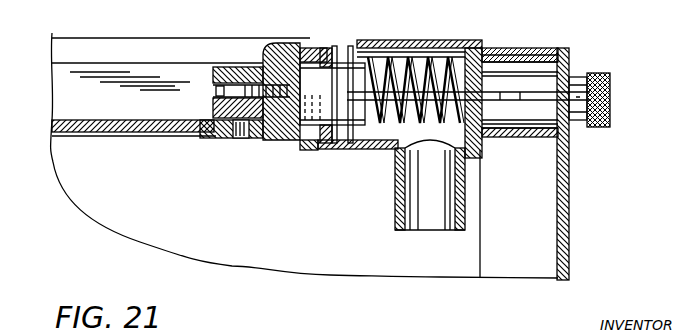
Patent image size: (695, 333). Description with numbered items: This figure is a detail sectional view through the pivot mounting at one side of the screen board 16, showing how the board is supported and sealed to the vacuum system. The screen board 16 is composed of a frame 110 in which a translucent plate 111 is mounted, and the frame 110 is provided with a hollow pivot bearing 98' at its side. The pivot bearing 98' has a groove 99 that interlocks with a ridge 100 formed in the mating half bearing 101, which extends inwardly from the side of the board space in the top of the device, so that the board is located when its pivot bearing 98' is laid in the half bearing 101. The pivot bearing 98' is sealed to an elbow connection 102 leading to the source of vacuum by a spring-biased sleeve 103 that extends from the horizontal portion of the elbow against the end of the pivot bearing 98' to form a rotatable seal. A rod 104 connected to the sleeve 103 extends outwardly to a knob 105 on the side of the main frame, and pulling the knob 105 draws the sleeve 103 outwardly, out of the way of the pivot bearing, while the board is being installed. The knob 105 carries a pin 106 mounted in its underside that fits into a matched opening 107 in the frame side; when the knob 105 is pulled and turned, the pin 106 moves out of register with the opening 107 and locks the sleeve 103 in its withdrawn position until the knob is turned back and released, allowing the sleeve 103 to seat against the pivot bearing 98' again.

The screen board 16 is at (118, 134).
The frame 110 is at (230, 67).
The pivot bearing 98' is at (278, 76).
The groove 99 is at (313, 48).
The ridge 100 is at (309, 150).
The half bearing 101 is at (361, 150).
The elbow connection 102 is at (396, 190).
The spring-biased sleeve 103 is at (402, 42).
The rod 104 is at (507, 100).
The knob 105 is at (611, 98).
The pin 106 is at (578, 78).
The opening 107 is at (556, 86).
The translucent plate 111 is at (121, 119).